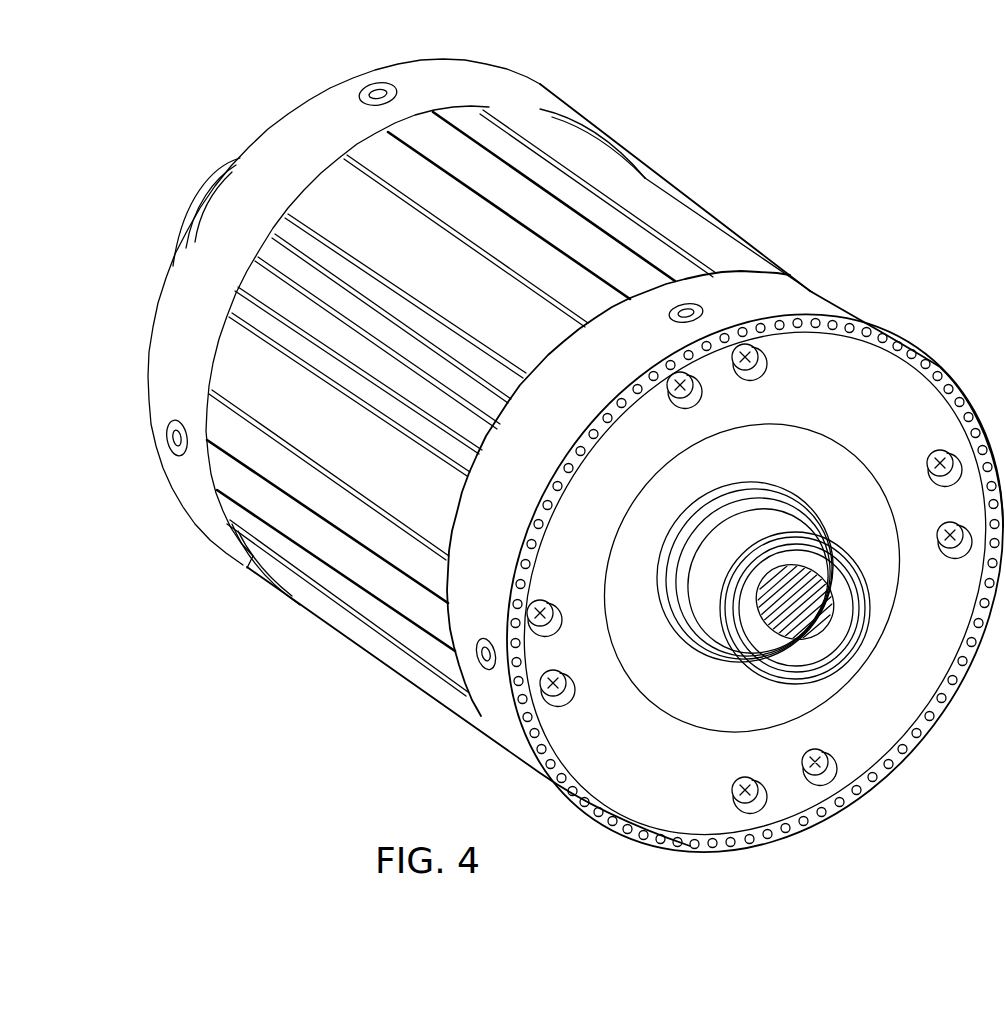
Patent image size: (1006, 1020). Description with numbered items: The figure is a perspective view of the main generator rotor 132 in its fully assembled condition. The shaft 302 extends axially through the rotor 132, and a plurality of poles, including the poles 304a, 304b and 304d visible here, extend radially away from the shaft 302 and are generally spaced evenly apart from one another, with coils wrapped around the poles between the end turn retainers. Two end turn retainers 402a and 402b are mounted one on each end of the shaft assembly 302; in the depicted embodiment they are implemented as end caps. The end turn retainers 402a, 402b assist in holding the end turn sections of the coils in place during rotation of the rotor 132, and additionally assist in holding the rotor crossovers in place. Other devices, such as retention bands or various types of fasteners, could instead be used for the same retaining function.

The main generator rotor 132 is at (805, 168).
The shaft 302 is at (820, 678).
The pole 304a is at (385, 223).
The pole 304b is at (660, 178).
The pole 304d is at (368, 642).
The end turn retainer 402a is at (831, 304).
The end turn retainer 402b is at (527, 80).